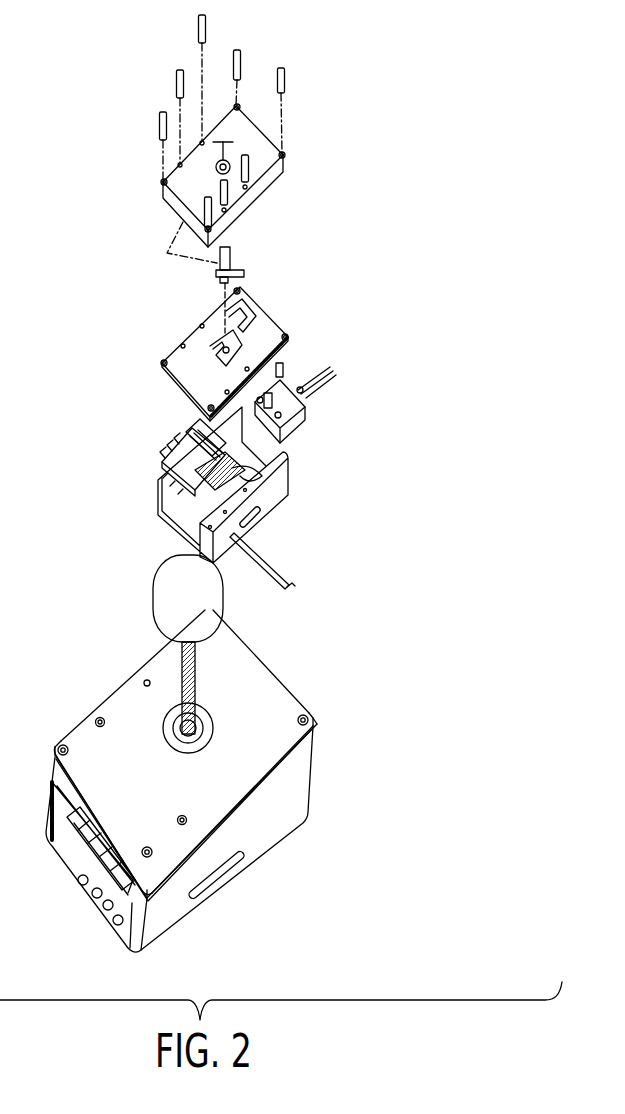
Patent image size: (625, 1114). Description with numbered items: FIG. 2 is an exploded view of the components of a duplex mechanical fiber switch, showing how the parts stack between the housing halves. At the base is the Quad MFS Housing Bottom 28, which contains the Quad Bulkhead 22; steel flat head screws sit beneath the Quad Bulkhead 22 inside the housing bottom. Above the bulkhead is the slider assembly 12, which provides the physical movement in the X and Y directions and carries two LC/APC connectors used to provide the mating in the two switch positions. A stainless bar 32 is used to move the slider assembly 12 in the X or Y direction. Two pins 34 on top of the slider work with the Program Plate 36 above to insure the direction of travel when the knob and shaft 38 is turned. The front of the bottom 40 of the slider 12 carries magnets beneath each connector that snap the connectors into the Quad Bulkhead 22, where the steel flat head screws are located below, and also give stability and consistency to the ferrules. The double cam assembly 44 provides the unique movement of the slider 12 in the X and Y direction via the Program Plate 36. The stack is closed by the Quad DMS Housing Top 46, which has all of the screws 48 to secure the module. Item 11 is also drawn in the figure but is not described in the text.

The connector cable 11 is at (230, 476).
The slider assembly 12 is at (314, 420).
The Quad Bulkhead 22 is at (162, 463).
The Quad MFS Housing Bottom 28 is at (267, 837).
The stainless bar 32 is at (295, 590).
The pins 34 is at (284, 370).
The Program Plate 36 is at (288, 336).
The knob and shaft 38 is at (155, 586).
The bottom of the slider 40 is at (288, 484).
The double cam assembly 44 is at (244, 274).
The Quad DMS Housing Top 46 is at (284, 174).
The screws 48 is at (284, 86).